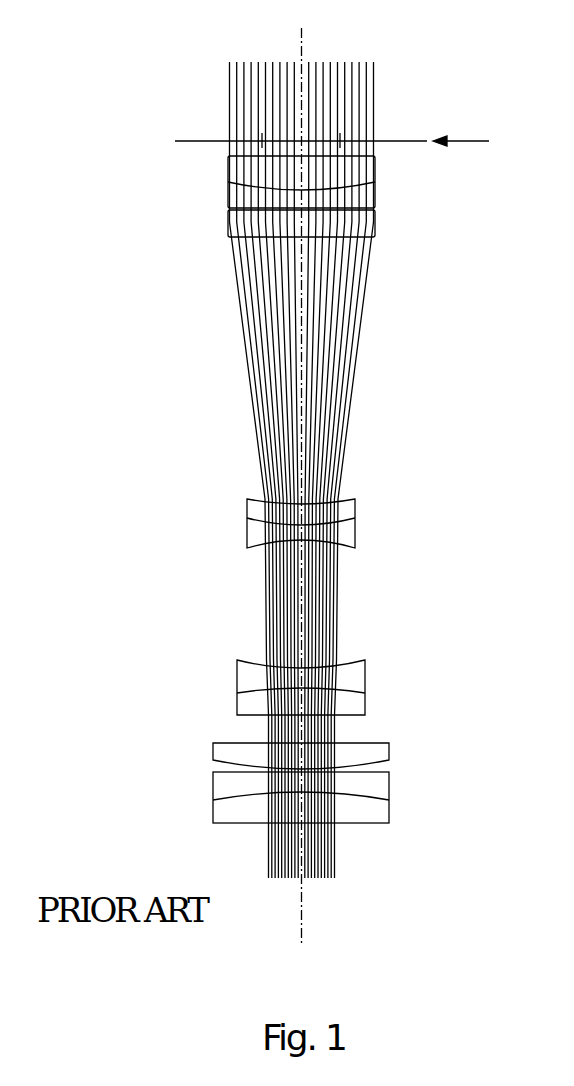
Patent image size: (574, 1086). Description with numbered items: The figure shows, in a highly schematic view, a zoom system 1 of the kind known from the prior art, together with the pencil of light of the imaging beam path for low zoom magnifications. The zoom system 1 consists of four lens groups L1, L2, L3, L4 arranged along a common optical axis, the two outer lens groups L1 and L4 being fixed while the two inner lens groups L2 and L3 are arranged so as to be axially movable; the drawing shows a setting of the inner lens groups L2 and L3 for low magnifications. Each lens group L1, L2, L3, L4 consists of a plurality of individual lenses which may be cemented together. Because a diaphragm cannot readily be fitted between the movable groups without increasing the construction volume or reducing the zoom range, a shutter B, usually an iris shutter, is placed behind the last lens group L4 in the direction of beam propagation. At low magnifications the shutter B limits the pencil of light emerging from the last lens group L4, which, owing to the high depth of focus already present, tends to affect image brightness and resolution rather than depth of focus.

The zoom system 1 is at (480, 316).
The shutter B is at (332, 151).
The first lens group L1 is at (373, 813).
The second lens group L2 is at (340, 667).
The third lens group L3 is at (343, 507).
The fourth lens group L4 is at (367, 168).